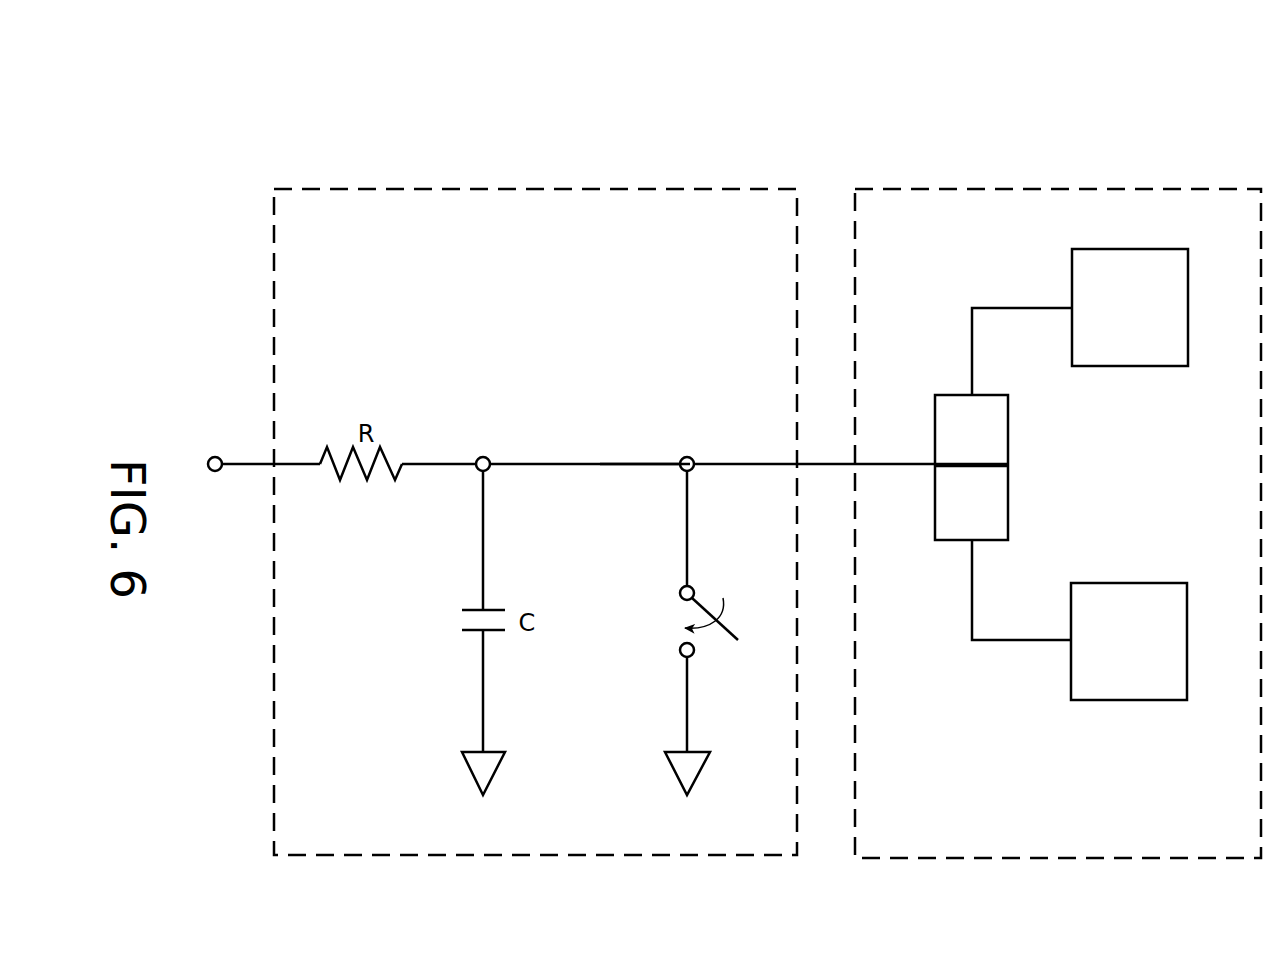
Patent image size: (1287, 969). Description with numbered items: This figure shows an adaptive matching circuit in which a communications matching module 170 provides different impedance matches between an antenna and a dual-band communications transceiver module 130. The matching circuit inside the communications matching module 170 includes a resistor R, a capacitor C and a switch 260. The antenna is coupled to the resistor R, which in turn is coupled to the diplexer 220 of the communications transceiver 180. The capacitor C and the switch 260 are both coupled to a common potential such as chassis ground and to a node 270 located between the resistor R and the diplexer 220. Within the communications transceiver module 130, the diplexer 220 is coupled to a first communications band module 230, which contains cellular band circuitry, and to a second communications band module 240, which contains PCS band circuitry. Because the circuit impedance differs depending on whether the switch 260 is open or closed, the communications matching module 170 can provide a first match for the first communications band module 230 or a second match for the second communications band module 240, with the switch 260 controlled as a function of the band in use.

The communications transceiver module 130 is at (858, 103).
The communications matching module 170 is at (307, 843).
The communications transceiver 180 is at (1194, 847).
The diplexer 220 is at (1008, 440).
The first communications band module 230 is at (1106, 327).
The second communications band module 240 is at (1105, 660).
The switch 260 is at (646, 641).
The node 270 is at (622, 464).